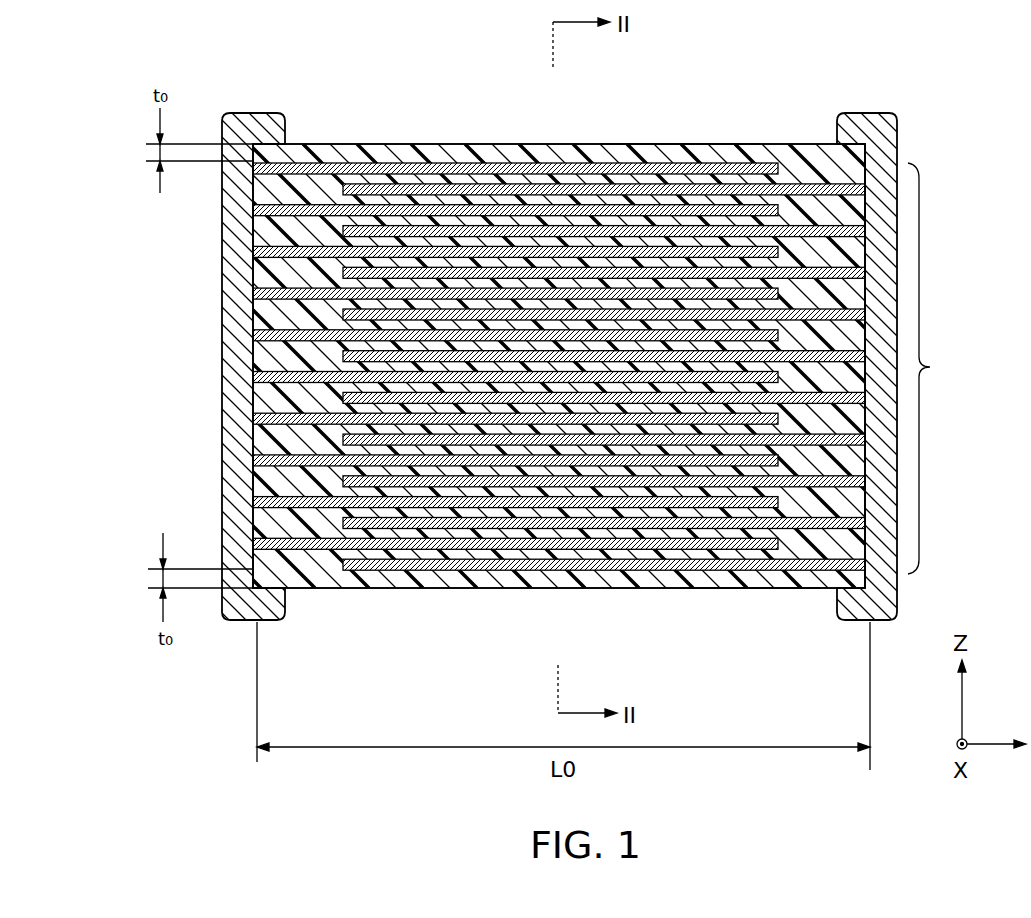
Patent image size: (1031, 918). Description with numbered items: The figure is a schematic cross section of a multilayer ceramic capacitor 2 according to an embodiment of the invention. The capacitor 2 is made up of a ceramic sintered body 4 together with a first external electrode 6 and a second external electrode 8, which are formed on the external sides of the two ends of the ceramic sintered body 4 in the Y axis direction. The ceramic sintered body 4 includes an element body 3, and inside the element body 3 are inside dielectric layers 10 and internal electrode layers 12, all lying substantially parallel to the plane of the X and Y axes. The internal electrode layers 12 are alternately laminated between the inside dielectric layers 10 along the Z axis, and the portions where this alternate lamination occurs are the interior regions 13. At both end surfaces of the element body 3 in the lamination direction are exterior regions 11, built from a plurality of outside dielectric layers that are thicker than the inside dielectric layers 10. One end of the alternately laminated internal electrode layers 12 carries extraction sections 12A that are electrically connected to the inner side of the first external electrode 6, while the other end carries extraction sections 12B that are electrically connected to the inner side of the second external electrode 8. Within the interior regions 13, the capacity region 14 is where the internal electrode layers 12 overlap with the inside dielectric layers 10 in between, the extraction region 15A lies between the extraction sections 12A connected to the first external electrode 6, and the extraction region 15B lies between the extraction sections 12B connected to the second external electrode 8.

The multilayer ceramic capacitor 2 is at (515, 394).
The element body 3 is at (780, 588).
The ceramic sintered body 4 is at (713, 588).
The first external electrode 6 is at (223, 456).
The second external electrode 8 is at (870, 113).
The inside dielectric layer 10 is at (508, 144).
The exterior region 11 is at (438, 144).
The internal electrode layer 12 is at (510, 363).
The extraction section 12A is at (313, 144).
The extraction section 12B is at (803, 144).
The interior region 13 is at (915, 366).
The capacity region 14 is at (692, 144).
The extraction region 15A is at (280, 188).
The extraction region 15B is at (845, 213).